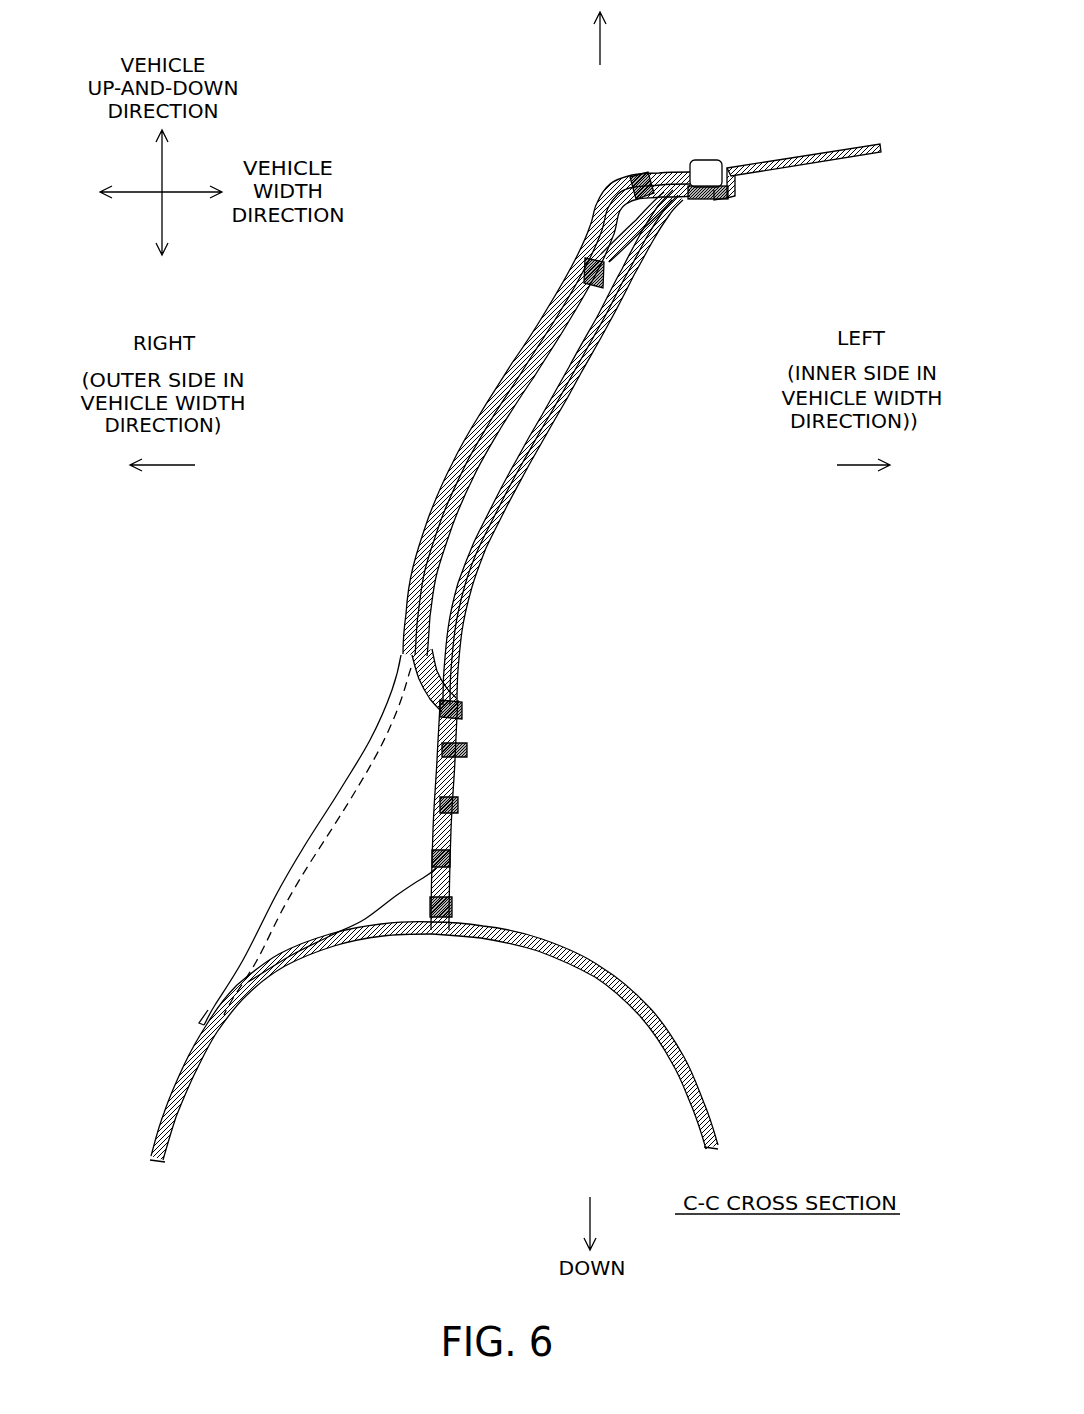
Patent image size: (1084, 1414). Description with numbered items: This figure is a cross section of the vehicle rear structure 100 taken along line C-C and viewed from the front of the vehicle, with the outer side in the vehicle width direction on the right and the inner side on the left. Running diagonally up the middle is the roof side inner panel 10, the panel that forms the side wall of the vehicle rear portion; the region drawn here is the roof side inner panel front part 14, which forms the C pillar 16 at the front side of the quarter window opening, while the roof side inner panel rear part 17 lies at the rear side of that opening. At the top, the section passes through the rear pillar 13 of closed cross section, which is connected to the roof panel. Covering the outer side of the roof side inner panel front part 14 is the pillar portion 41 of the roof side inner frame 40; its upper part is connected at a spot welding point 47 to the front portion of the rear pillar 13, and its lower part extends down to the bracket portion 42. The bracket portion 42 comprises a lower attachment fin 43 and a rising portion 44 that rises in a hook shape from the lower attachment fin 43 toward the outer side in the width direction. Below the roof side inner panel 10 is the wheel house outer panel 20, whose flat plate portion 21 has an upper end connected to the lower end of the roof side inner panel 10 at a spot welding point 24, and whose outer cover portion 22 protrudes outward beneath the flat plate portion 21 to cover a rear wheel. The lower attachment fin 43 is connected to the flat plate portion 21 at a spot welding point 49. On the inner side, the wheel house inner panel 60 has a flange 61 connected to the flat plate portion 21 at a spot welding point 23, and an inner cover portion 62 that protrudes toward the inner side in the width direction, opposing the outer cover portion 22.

The vehicle rear structure 100 is at (432, 110).
The roof side inner panel 10 is at (570, 390).
The rear pillar 13 is at (657, 226).
The roof side inner panel front part 14 is at (538, 460).
The C pillar 16 is at (498, 535).
The roof side inner panel rear part 17 is at (805, 150).
The wheel house outer panel 20 is at (308, 960).
The flat plate portion 21 is at (463, 773).
The outer cover portion 22 is at (163, 1097).
The spot welding point 23 is at (463, 933).
The spot welding point 24 is at (467, 752).
The roof side inner frame 40 is at (360, 745).
The pillar portion 41 is at (460, 445).
The bracket portion 42 is at (297, 843).
The lower attachment fin 43 is at (453, 820).
The rising portion 44 is at (347, 887).
The spot welding point 47 is at (632, 176).
The spot welding point 49 is at (447, 773).
The wheel house inner panel 60 is at (590, 977).
The flange 61 is at (450, 907).
The inner cover portion 62 is at (680, 1043).